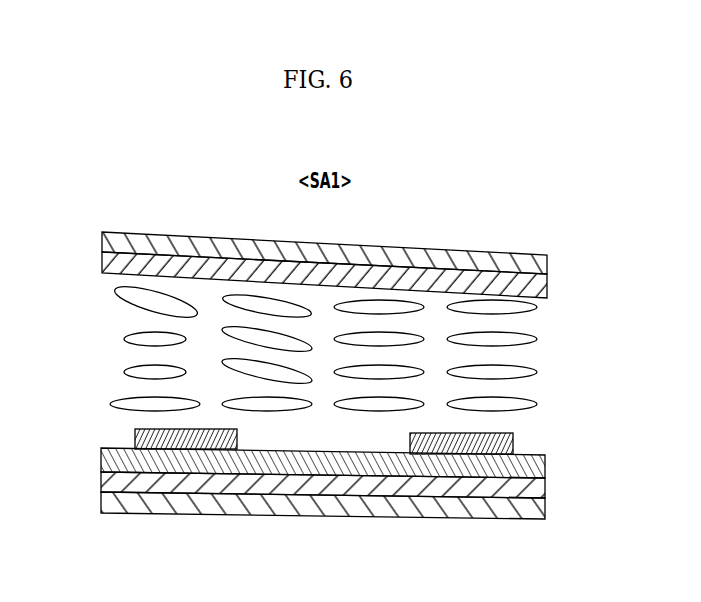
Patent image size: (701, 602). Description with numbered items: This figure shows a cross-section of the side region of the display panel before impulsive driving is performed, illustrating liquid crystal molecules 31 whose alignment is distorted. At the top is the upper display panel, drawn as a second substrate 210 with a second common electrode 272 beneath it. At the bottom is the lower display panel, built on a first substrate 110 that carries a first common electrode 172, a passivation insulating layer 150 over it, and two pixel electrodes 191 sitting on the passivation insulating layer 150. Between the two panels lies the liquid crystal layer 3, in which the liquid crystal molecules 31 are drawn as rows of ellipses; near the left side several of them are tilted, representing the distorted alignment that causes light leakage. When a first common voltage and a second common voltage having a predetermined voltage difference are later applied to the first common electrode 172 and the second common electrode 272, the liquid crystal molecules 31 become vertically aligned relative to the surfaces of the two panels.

The second substrate 210 is at (541, 263).
The second common electrode 272 is at (544, 286).
The liquid crystal molecules 31 is at (98, 293).
The liquid crystal layer 3 is at (311, 365).
The pixel electrode 191 is at (137, 441).
The passivation insulating layer 150 is at (544, 461).
The first common electrode 172 is at (545, 490).
The first substrate 110 is at (544, 512).